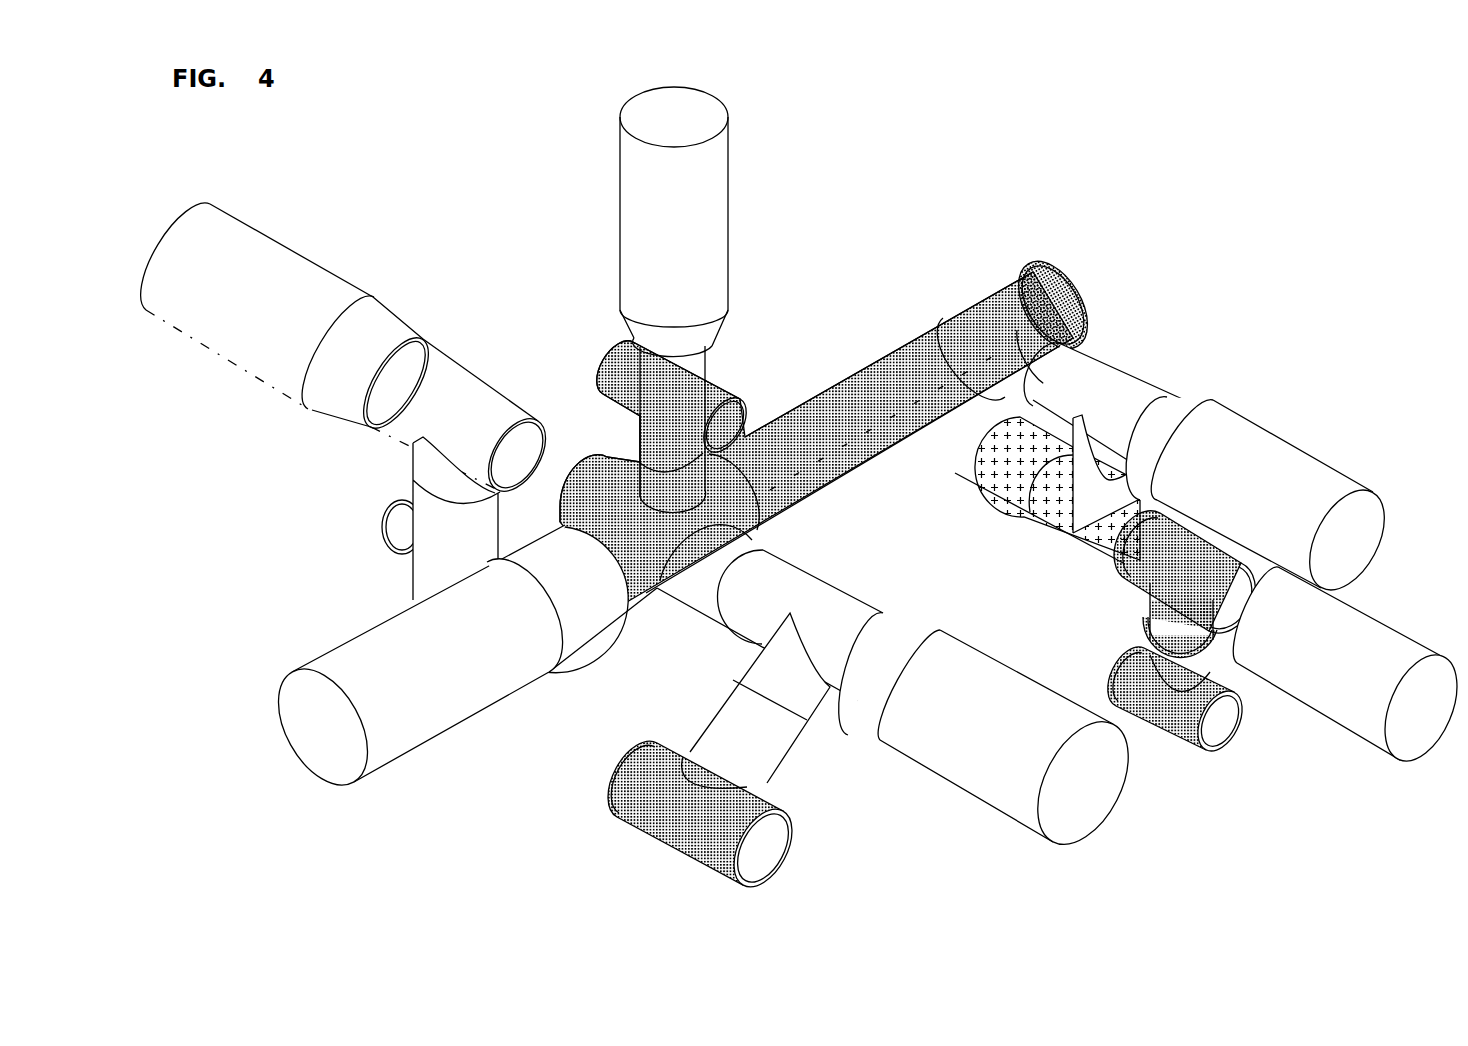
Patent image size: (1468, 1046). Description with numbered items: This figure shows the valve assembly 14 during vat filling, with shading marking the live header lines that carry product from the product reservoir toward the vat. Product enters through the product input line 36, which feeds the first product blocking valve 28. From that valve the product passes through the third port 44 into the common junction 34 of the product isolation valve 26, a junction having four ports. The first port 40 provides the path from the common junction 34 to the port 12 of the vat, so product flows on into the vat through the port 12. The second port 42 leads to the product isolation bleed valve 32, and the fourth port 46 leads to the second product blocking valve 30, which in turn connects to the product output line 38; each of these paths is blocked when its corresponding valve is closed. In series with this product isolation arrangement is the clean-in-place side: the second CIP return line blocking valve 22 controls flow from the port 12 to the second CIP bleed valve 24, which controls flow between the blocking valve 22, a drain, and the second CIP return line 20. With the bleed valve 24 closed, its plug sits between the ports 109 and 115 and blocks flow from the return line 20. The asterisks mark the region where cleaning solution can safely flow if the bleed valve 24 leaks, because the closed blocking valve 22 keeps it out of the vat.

The port 12 is at (1070, 283).
The valve assembly 14 is at (884, 184).
The second CIP return line 20 is at (1188, 728).
The second CIP return line blocking valve 22 is at (1240, 425).
The second CIP bleed valve 24 is at (1350, 718).
The product isolation valve 26 is at (420, 730).
The first product blocking valve 28 is at (620, 178).
The second product blocking valve 30 is at (1025, 813).
The product isolation bleed valve 32 is at (305, 275).
The common junction 34 is at (748, 523).
The product input line 36 is at (720, 388).
The product output line 38 is at (707, 851).
The first port 40 is at (775, 497).
The second port 42 is at (597, 460).
The third port 44 is at (640, 470).
The fourth port 46 is at (720, 607).
The port 109 is at (1107, 480).
The port 115 is at (1142, 633).